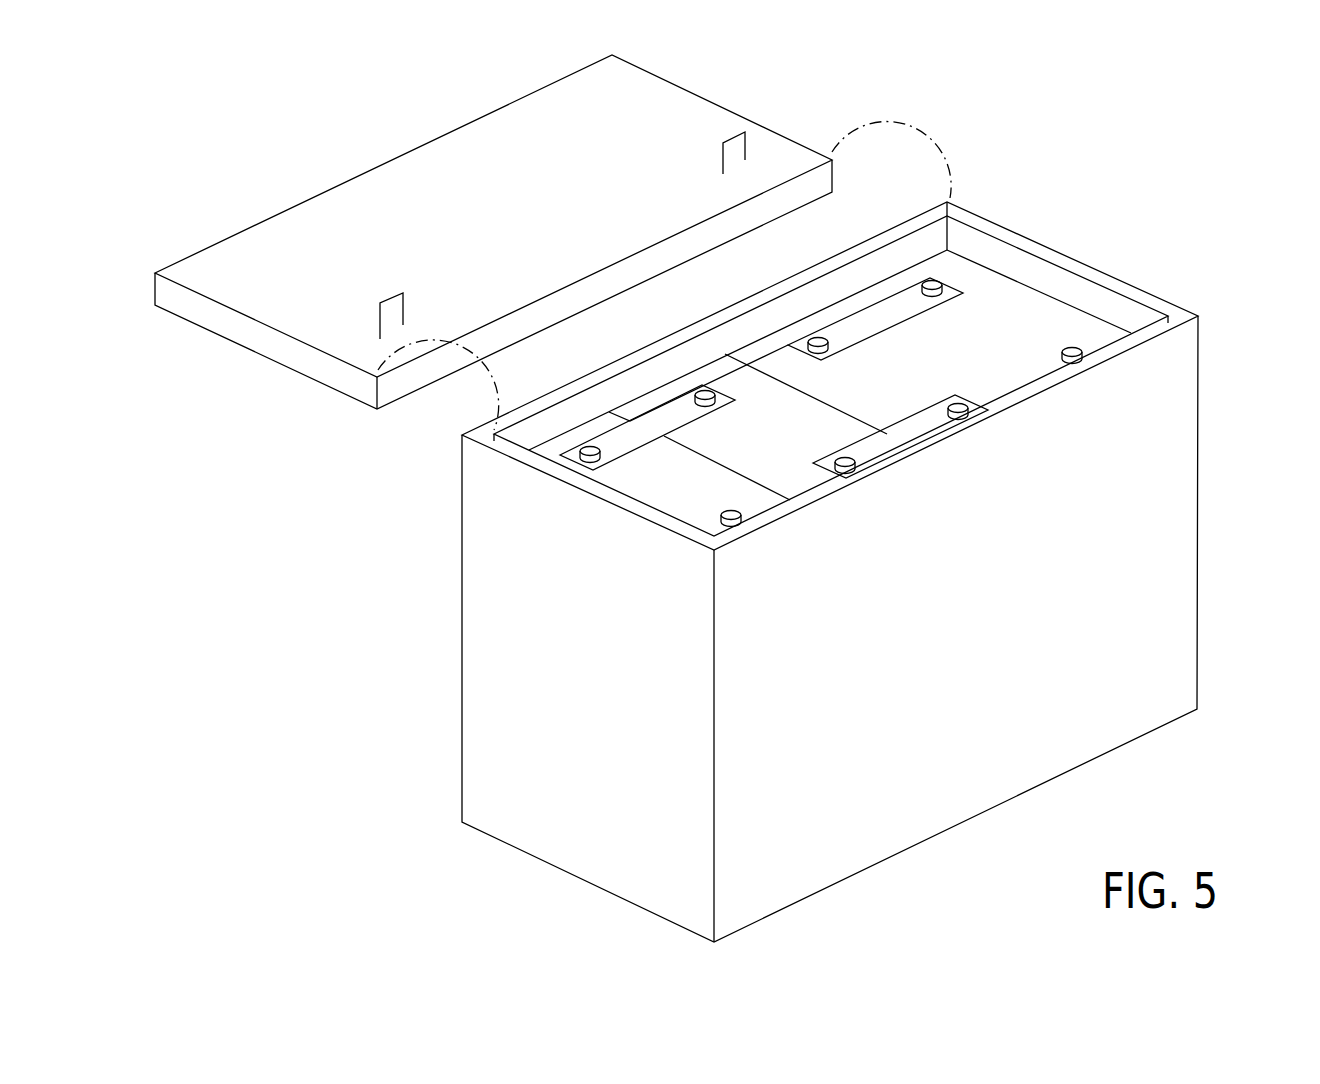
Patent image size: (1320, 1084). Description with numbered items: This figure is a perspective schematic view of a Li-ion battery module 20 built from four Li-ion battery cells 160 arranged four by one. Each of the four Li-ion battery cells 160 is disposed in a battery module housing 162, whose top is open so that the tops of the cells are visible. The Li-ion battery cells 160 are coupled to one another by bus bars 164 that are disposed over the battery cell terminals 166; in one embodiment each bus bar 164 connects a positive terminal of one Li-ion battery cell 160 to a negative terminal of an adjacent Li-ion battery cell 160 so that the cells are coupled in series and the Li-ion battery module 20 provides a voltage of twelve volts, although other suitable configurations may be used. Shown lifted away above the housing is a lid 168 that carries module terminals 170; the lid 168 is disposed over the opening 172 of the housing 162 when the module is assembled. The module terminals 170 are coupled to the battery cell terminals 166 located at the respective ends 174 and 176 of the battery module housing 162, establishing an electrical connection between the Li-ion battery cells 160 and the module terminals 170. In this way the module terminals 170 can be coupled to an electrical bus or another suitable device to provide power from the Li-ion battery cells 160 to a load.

The Li-ion battery module 20 is at (1142, 184).
The Li-ion battery cell 160 is at (1045, 316).
The battery module housing 162 is at (1190, 551).
The bus bar 164 is at (910, 306).
The battery cell terminal 166 is at (940, 284).
The lid 168 is at (803, 152).
The module terminal 170 is at (736, 136).
The opening 172 is at (1093, 285).
The end of the battery module housing 174 is at (799, 549).
The end of the battery module housing 176 is at (1144, 377).